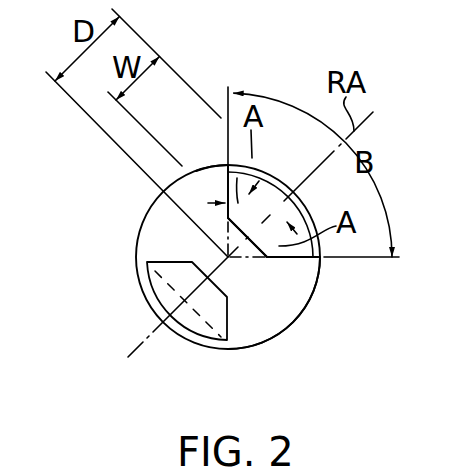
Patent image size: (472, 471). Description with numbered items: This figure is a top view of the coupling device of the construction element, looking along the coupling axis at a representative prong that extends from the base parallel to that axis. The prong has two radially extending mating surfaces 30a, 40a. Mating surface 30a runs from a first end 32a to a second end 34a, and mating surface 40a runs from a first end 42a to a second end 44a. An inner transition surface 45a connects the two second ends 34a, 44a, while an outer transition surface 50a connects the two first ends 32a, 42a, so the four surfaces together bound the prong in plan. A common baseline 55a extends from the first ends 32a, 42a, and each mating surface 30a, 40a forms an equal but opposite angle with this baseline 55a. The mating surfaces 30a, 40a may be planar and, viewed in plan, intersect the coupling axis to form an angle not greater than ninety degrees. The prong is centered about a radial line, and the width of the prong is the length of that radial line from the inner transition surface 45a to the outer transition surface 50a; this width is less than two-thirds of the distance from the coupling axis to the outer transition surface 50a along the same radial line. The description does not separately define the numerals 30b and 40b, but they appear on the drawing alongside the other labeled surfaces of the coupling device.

The mating surface 30a is at (310, 302).
The cutter body insert portion 30b is at (164, 262).
The first end of mating surface 30a 32a is at (318, 261).
The second end of mating surface 30a 34a is at (293, 262).
The mating surface 40a is at (227, 187).
The chip flute 40b is at (248, 262).
The first end of mating surface 40a 42a is at (222, 164).
The second end of mating surface 40a 44a is at (228, 220).
The inner transition surface 45a is at (274, 261).
The outer transition surface 50a is at (283, 200).
The common baseline 55a is at (291, 196).